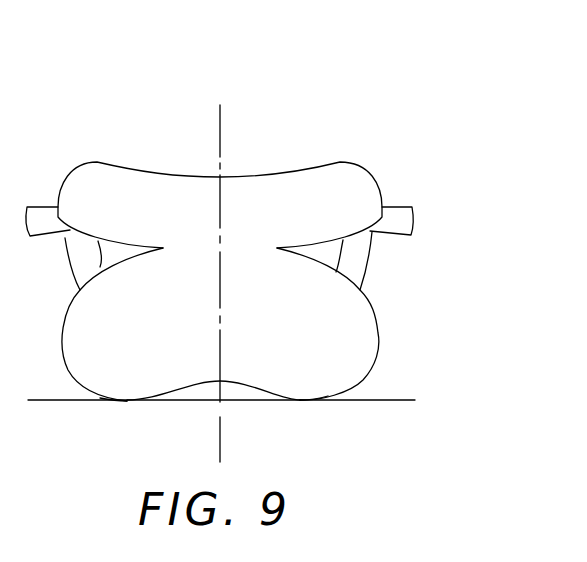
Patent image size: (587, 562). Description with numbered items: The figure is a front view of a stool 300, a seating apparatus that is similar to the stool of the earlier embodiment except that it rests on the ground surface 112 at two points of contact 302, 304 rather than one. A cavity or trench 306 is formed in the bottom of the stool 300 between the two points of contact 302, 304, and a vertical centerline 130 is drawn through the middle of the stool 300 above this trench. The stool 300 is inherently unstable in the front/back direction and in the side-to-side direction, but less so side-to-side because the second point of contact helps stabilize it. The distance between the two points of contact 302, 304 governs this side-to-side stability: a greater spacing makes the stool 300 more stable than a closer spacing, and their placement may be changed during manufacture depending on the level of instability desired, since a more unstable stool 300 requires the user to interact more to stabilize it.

The stool 300 is at (321, 73).
The central axis 130 is at (222, 118).
The ground surface 112 is at (43, 399).
The cavity or trench 306 is at (231, 394).
The point of contact 304 is at (119, 410).
The point of contact 302 is at (311, 410).